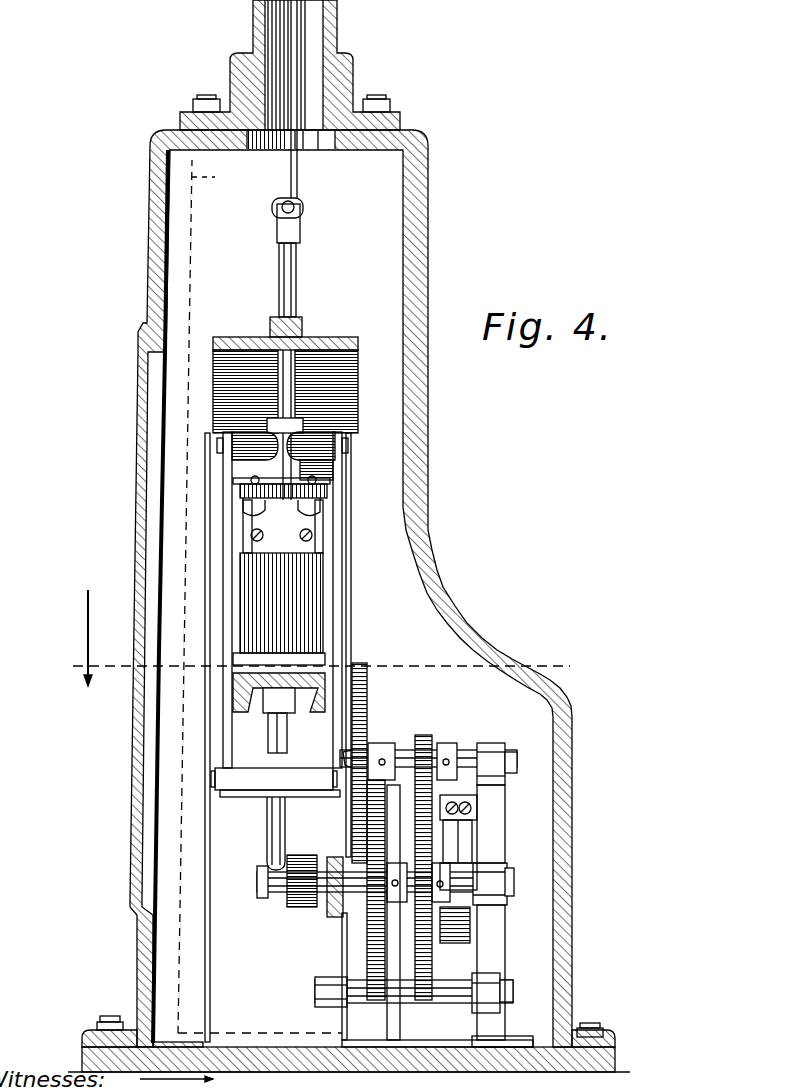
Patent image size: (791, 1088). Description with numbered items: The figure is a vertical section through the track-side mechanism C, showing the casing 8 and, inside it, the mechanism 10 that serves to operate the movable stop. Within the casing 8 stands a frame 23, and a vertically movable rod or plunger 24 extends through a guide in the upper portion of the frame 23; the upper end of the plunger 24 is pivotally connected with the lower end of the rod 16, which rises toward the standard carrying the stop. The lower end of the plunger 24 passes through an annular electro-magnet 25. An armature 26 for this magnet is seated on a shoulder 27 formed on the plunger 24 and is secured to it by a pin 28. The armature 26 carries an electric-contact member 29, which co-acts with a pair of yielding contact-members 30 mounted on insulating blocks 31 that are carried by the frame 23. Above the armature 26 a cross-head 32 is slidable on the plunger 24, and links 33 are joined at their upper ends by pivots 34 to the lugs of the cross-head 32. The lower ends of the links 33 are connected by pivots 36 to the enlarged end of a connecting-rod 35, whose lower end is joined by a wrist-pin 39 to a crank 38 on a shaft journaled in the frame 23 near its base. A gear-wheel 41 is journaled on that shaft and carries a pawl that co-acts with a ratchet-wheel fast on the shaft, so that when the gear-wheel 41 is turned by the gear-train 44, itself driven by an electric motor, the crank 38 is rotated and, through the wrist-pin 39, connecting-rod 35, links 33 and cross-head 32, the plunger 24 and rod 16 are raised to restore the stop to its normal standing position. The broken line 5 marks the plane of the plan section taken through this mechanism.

The section line 5 is at (314, 638).
The casing 8 is at (136, 808).
The stop-operating mechanism 10 is at (206, 828).
The rod 16 is at (290, 168).
The frame 23 is at (351, 590).
The plunger 24 is at (297, 270).
The annular electro-magnet 25 is at (298, 590).
The armature 26 is at (328, 490).
The shoulder 27 is at (310, 499).
The pin 28 is at (253, 477).
The electric-contact member 29 is at (330, 479).
The yielding contact-members 30 is at (262, 503).
The insulating blocks 31 is at (243, 523).
The cross-head 32 is at (267, 425).
The links 33 is at (227, 603).
The pivots 34 is at (343, 440).
The connecting-rod 35 is at (273, 832).
The pivots 36 is at (215, 773).
The crank 38 is at (300, 892).
The wrist-pin 39 is at (258, 890).
The gear-wheel 41 is at (366, 950).
The gear-train 44 is at (370, 713).
The stop mechanism C is at (469, 475).